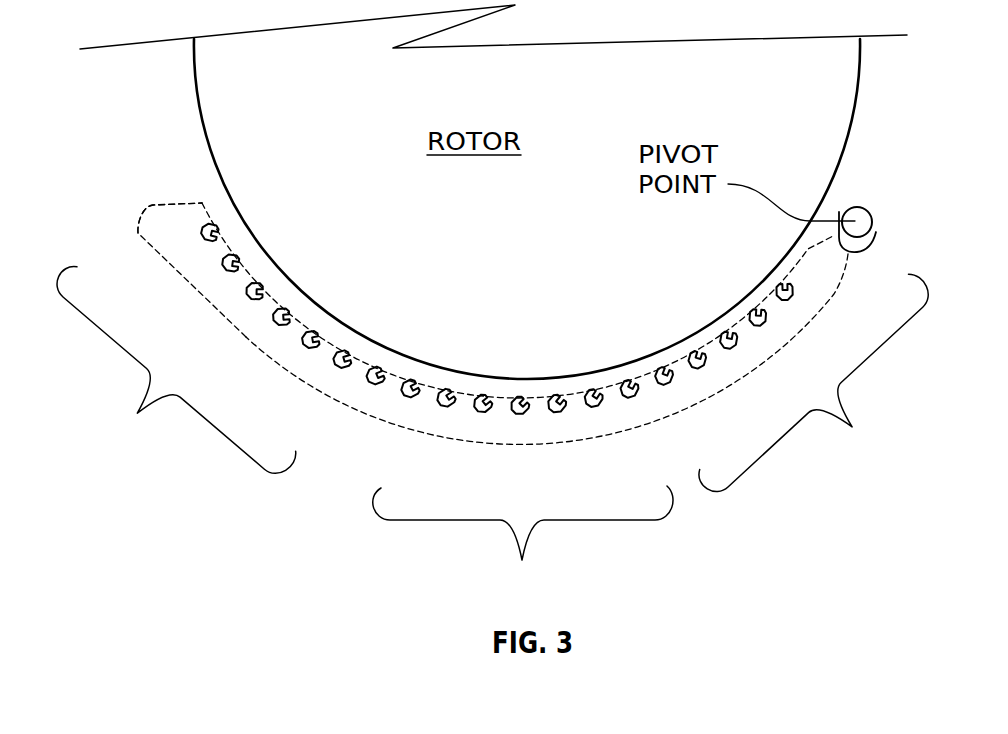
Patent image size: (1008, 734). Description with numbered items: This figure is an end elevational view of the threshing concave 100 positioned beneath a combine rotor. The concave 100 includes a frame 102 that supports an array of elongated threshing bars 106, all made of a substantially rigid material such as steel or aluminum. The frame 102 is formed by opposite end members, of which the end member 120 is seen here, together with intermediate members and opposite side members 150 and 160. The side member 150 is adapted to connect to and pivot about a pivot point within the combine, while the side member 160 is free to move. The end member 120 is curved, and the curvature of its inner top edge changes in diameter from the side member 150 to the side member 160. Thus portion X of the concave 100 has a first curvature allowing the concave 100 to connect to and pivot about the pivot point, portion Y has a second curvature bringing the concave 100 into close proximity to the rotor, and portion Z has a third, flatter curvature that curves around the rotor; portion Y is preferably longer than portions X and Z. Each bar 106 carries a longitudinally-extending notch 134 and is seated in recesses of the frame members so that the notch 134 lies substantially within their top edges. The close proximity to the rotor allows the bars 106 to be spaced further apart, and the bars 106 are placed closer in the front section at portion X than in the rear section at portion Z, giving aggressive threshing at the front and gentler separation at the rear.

The threshing concave 100 is at (118, 256).
The frame 102 is at (344, 426).
The elongated threshing bar 106 is at (554, 411).
The end member 120 is at (637, 411).
The longitudinally-extending notch 134 is at (242, 267).
The side member 150 is at (822, 262).
The side member 160 is at (186, 202).
The portion X is at (827, 399).
The portion Y is at (523, 545).
The portion Z is at (162, 385).